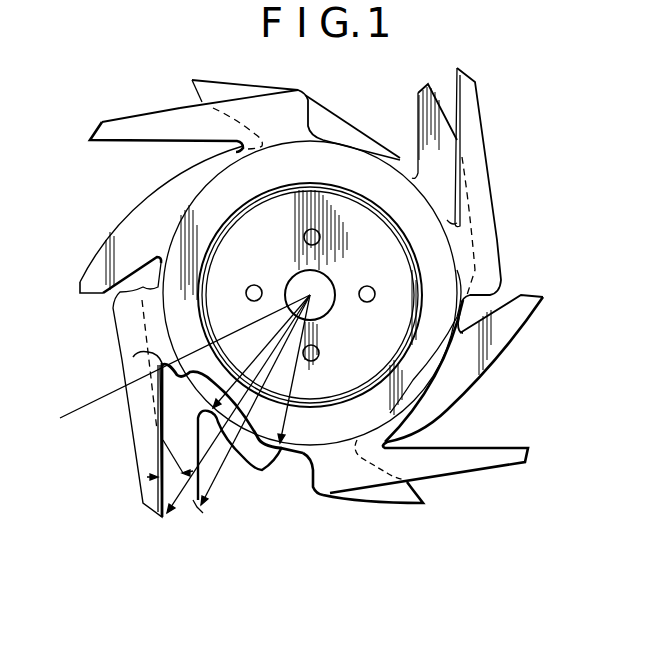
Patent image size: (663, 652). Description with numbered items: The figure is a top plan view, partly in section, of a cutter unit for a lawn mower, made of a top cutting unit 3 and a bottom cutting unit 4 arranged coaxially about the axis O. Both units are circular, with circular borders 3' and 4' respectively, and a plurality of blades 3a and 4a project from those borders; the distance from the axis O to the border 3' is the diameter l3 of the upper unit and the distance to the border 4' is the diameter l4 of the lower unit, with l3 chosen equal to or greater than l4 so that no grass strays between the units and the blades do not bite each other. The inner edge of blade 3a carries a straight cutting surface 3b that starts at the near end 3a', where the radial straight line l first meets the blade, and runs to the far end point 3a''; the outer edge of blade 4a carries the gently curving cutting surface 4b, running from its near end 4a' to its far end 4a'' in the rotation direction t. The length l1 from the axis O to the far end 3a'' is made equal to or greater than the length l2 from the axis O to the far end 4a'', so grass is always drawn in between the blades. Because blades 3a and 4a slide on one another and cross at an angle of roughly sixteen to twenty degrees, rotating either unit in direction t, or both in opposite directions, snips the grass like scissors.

The axis O is at (290, 286).
The radial straight line l is at (246, 326).
The distance between axis and far end of blade cutting surface 3b l1 is at (238, 404).
The distance between axis and far end of cutting surface 4b l2 is at (255, 400).
The diameter of upper cutter unit l3 is at (294, 369).
The diameter of lower cutter unit l4 is at (261, 351).
The top cutting unit 3 is at (429, 451).
The circular border of top cutting unit 3' is at (347, 483).
The blade of top cutting unit 3a is at (123, 408).
The near end of cutting surface 3b 3a' is at (121, 364).
The far end point of cutting surface 3b 3a'' is at (178, 535).
The cutting surface of top cutting unit 3b is at (165, 395).
The bottom cutting unit 4 is at (463, 258).
The circular border of bottom cutting unit 4' is at (238, 462).
The blade of bottom cutting unit 4a is at (189, 462).
The near end of cutting surface 4b 4a' is at (237, 208).
The far end of cutting surface 4b 4a'' is at (219, 517).
The cutting surface of bottom cutting unit 4b is at (150, 477).
The direction of rotation t is at (147, 556).